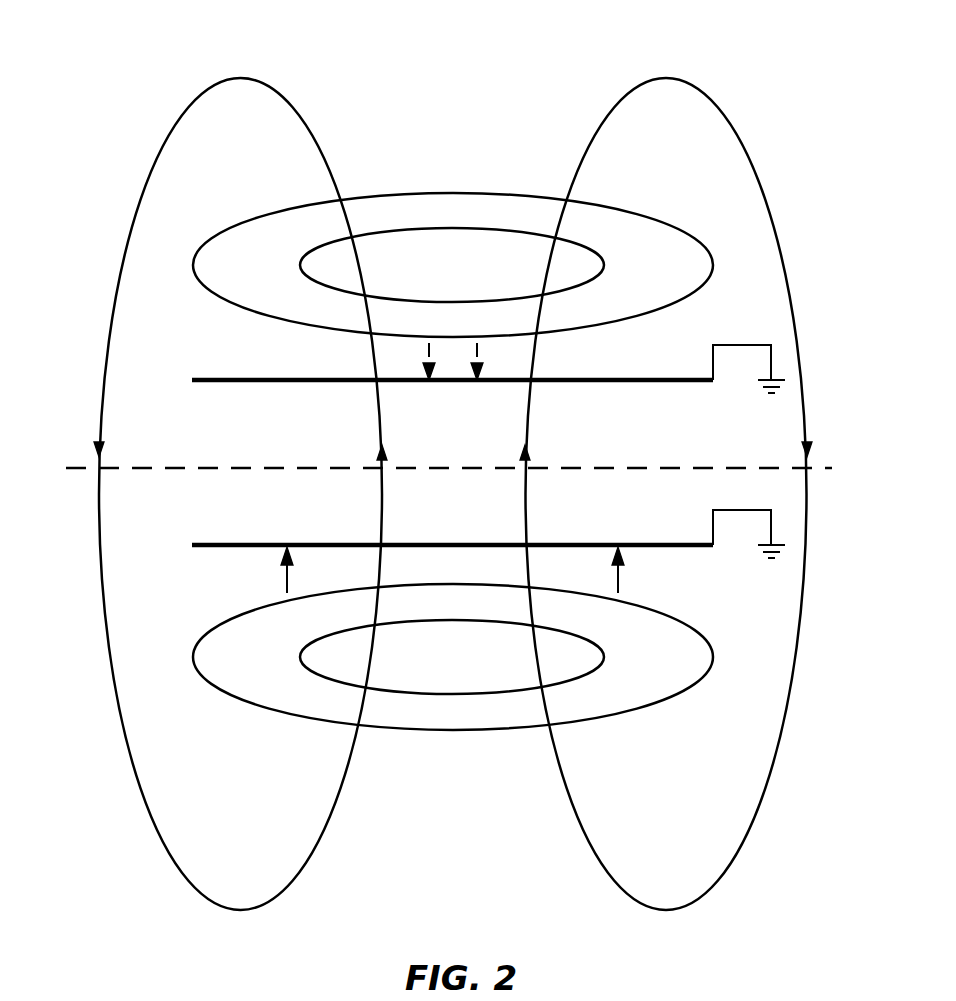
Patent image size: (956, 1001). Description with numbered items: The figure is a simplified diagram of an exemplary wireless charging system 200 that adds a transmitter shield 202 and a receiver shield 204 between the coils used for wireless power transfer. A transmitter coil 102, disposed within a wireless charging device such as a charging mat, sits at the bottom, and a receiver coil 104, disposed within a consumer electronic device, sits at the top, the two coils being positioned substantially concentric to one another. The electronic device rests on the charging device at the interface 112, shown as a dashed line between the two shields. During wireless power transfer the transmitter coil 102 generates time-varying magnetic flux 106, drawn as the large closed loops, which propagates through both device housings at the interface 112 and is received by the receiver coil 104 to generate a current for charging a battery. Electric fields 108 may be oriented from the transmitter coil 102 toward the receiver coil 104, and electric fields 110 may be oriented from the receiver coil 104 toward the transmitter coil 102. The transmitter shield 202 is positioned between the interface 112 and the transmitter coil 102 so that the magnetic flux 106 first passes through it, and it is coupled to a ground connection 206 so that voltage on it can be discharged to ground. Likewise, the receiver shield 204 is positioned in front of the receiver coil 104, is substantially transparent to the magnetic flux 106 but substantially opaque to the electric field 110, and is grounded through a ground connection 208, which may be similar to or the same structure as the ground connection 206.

The wireless charging system 200 is at (217, 53).
The transmitter coil 102 is at (473, 735).
The receiver coil 104 is at (418, 192).
The time-varying magnetic flux 106 is at (335, 812).
The electric fields 108 is at (287, 588).
The electric fields 110 is at (429, 352).
The interface 112 is at (205, 465).
The transmitter shield 202 is at (335, 542).
The receiver shield 204 is at (335, 383).
The ground connection 206 is at (760, 557).
The ground connection 208 is at (760, 390).